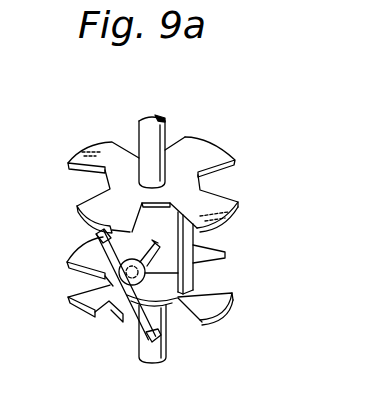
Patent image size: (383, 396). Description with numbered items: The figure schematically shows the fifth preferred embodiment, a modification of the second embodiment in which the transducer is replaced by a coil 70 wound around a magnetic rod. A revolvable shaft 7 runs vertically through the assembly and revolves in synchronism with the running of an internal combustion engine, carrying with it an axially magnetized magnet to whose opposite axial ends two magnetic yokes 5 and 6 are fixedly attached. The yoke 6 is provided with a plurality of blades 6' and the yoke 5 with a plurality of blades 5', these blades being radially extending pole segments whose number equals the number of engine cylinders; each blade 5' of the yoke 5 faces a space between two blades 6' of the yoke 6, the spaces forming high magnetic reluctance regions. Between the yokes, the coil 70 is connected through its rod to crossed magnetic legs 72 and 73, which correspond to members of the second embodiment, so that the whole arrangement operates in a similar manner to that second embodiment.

The revolvable shaft 7 is at (167, 124).
The magnetic yoke 6 is at (140, 185).
The blades 6' is at (228, 157).
The magnetic leg 73 is at (168, 255).
The coil 70 is at (193, 275).
The magnetic leg 72 is at (133, 327).
The blades 5' is at (147, 311).
The magnetic yoke 5 is at (146, 301).